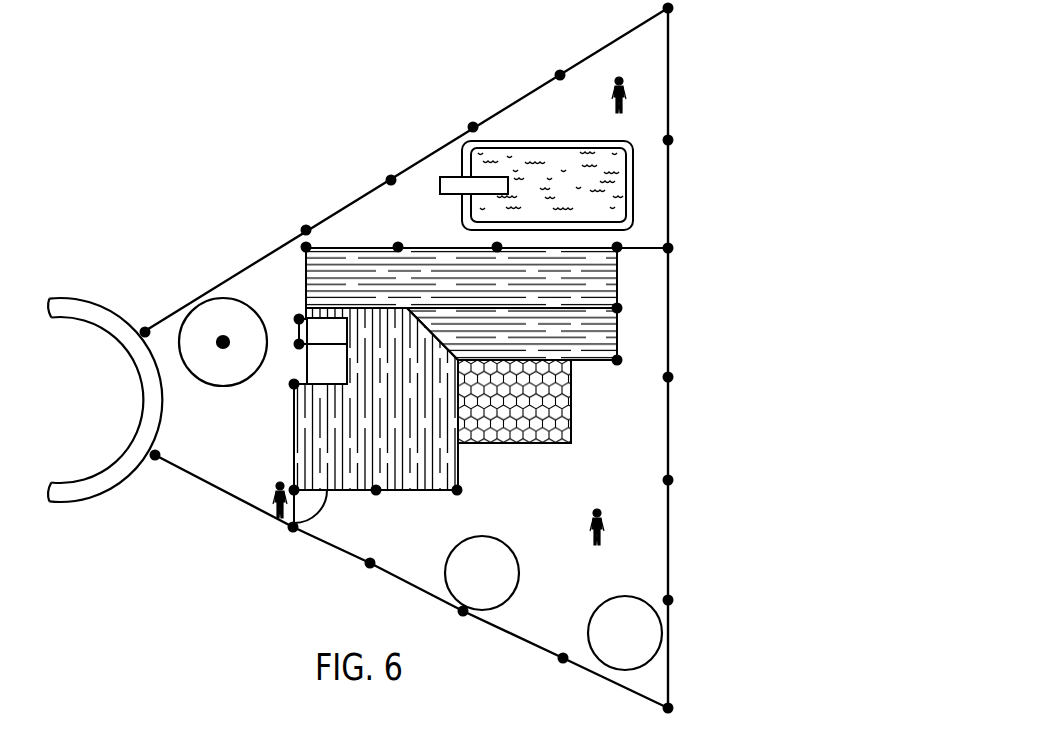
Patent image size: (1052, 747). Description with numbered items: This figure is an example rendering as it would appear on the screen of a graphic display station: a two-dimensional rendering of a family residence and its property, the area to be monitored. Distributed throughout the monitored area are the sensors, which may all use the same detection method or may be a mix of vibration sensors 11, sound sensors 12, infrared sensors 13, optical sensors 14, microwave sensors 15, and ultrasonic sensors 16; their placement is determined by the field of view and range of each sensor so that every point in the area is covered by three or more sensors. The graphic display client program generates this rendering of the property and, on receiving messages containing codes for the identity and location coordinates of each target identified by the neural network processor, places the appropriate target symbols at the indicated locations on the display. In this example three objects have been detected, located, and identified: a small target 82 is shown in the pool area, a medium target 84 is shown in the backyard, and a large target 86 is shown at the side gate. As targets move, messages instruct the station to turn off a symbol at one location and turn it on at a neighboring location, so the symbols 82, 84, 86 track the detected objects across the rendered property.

The vibration sensors 11 is at (620, 268).
The sound sensors 12 is at (747, 292).
The infrared sensors 13 is at (747, 292).
The optical sensors 14 is at (747, 292).
The microwave sensors 15 is at (640, 248).
The ultrasonic sensors 16 is at (751, 292).
The small target 82 is at (617, 83).
The medium target 84 is at (608, 527).
The large target 86 is at (276, 506).